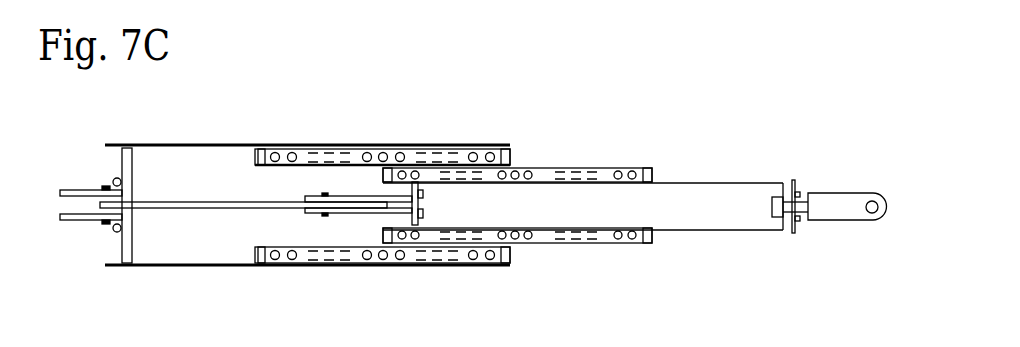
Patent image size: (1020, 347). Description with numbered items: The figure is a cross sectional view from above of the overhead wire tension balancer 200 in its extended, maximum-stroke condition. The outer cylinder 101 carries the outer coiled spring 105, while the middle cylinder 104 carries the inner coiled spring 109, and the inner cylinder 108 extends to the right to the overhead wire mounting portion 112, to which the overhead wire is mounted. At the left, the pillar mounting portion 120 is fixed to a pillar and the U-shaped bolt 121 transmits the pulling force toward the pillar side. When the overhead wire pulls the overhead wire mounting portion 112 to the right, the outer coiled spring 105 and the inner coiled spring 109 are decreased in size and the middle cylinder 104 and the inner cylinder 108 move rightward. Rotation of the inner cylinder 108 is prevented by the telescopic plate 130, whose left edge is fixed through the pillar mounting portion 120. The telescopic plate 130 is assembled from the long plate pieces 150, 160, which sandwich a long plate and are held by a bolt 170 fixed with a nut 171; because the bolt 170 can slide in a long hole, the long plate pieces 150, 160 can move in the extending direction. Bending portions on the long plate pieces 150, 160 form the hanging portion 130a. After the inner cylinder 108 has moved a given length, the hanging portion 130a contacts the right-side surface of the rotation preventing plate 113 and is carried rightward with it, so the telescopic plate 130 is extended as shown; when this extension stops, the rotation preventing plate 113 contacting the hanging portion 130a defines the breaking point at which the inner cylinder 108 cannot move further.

The outer cylinder 101 is at (415, 145).
The middle cylinder 104 is at (548, 168).
The outer coiled spring 105 is at (372, 264).
The inner cylinder 108 is at (748, 183).
The inner coiled spring 109 is at (618, 243).
The overhead wire mounting portion 112 is at (833, 192).
The rotation preventing plate 113 is at (463, 245).
The pillar mounting portion 120 is at (85, 218).
The U-shaped bolt 121 is at (112, 230).
The telescopic plate 130 is at (325, 214).
The hanging portion 130a is at (428, 218).
The long plate piece 150 is at (363, 214).
The long plate piece 160 is at (365, 197).
The bolt 170 is at (325, 194).
The nut 171 is at (322, 217).
The overhead wire tension balancer 200 is at (705, 93).